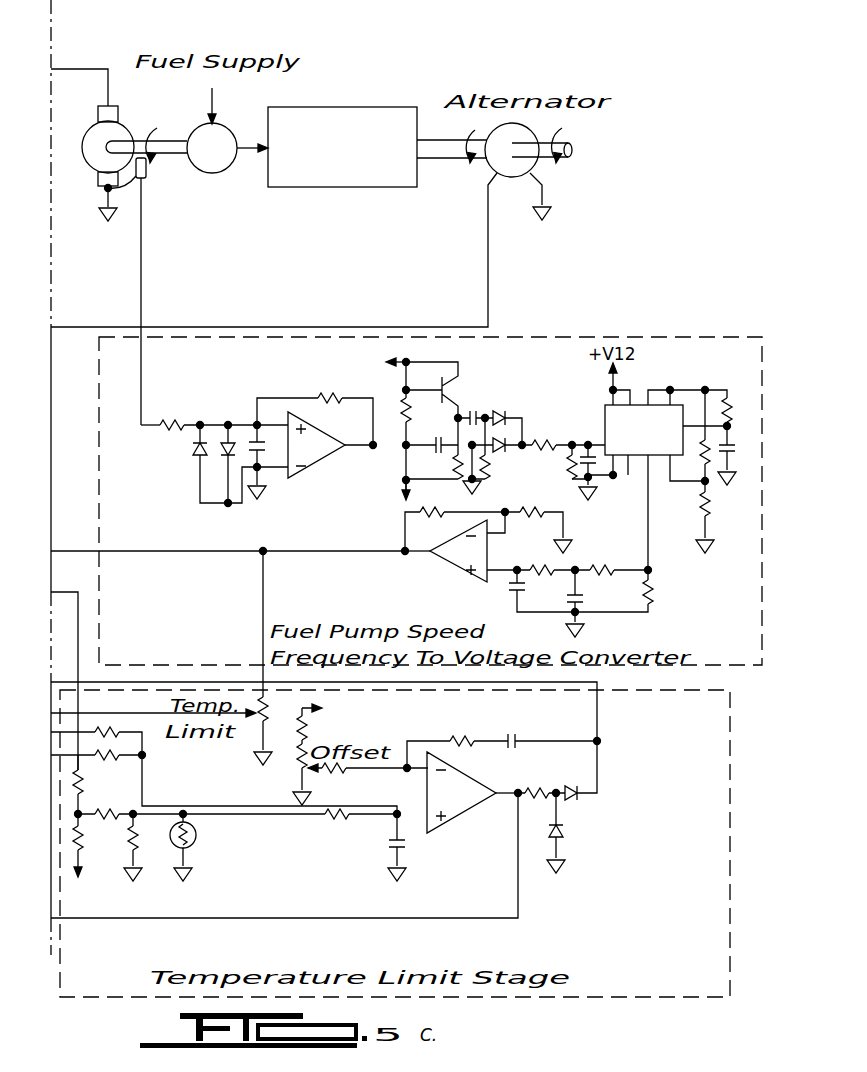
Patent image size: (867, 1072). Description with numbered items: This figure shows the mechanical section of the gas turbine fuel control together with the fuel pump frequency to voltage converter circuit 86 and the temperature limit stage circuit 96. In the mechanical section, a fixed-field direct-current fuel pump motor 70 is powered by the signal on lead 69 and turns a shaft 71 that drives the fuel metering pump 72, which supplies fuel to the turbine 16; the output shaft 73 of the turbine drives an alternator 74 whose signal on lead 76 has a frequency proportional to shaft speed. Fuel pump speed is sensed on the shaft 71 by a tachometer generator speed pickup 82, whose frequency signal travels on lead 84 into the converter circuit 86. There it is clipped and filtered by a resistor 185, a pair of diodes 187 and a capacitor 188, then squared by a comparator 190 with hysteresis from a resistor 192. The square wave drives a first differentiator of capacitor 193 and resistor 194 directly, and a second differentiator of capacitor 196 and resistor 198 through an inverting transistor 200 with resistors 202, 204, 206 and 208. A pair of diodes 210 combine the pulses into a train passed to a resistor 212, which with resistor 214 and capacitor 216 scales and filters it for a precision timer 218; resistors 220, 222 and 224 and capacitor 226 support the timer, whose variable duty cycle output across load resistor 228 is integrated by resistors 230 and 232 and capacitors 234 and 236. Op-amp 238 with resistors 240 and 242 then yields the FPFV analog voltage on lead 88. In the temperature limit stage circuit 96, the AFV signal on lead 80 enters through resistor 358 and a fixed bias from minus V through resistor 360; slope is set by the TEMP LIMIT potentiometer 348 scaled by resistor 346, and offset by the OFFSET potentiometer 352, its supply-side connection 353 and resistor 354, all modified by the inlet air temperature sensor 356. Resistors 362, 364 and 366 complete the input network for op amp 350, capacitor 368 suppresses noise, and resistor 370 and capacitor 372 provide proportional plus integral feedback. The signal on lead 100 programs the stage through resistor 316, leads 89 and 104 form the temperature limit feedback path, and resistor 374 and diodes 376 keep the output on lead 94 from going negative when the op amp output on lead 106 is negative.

The lead 69 is at (86, 68).
The fuel pump motor 70 is at (122, 128).
The shaft 71 is at (172, 142).
The fuel metering pump 72 is at (226, 126).
The turbine 16 is at (380, 106).
The output shaft 73 is at (462, 142).
The alternator 74 is at (528, 140).
The lead 76 is at (488, 200).
The tachometer generator speed pickup 82 is at (105, 192).
The lead 84 is at (141, 262).
The fuel pump frequency to voltage converter circuit 86 is at (660, 670).
The lead 88 is at (80, 540).
The lead 80 is at (80, 582).
The lead 94 is at (57, 682).
The temperature limit stage circuit 96 is at (465, 1000).
The lead 89 is at (92, 700).
The lead 104 is at (88, 738).
The lead 100 is at (88, 770).
The lead 106 is at (78, 925).
The resistor 185 is at (170, 420).
The pair of diodes 187 is at (222, 452).
The capacitor 188 is at (252, 440).
The comparator 190 is at (335, 462).
The resistor 192 is at (325, 396).
The capacitor 193 is at (403, 470).
The resistor 194 is at (453, 480).
The capacitor 196 is at (478, 414).
The resistor 198 is at (490, 458).
The inverting transistor 200 is at (458, 382).
The resistor 202 is at (398, 376).
The resistor 204 is at (412, 404).
The resistor 206 is at (403, 452).
The resistor 208 is at (452, 460).
The pair of diodes 210 is at (508, 420).
The resistor 212 is at (546, 442).
The resistor 214 is at (492, 474).
The capacitor 216 is at (590, 480).
The precision timer 218 is at (600, 420).
The resistor 220 is at (730, 398).
The resistor 222 is at (700, 468).
The resistor 224 is at (700, 512).
The capacitor 226 is at (735, 455).
The load resistor 228 is at (650, 590).
The resistor 230 is at (600, 568).
The resistor 232 is at (540, 568).
The capacitor 234 is at (583, 596).
The capacitor 236 is at (510, 590).
The op-amp 238 is at (458, 568).
The resistor 240 is at (410, 513).
The resistor 242 is at (507, 510).
The resistor 346 is at (112, 740).
The resistor 316 is at (115, 760).
The resistor 358 is at (72, 778).
The resistor 362 is at (82, 790).
The resistor 360 is at (86, 846).
The resistor 364 is at (128, 860).
The inlet air temperature sensor 356 is at (170, 822).
The TEMP LIMIT potentiometer 348 is at (266, 706).
The OFFSET potentiometer 352 is at (298, 769).
The potentiometer supply connection 353 is at (308, 722).
The resistor 354 is at (338, 778).
The resistor 366 is at (334, 818).
The capacitor 368 is at (406, 847).
The resistor 370 is at (464, 740).
The capacitor 372 is at (516, 738).
The resistor 374 is at (536, 790).
The diodes 376 is at (566, 832).
The op amp 350 is at (446, 818).